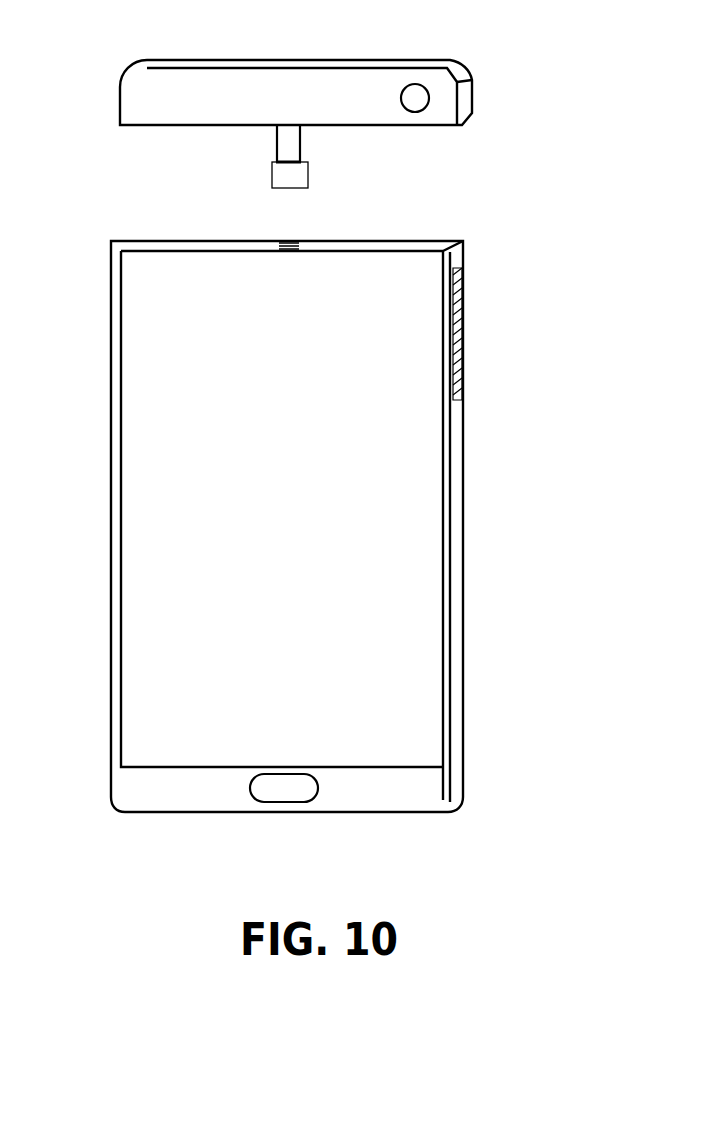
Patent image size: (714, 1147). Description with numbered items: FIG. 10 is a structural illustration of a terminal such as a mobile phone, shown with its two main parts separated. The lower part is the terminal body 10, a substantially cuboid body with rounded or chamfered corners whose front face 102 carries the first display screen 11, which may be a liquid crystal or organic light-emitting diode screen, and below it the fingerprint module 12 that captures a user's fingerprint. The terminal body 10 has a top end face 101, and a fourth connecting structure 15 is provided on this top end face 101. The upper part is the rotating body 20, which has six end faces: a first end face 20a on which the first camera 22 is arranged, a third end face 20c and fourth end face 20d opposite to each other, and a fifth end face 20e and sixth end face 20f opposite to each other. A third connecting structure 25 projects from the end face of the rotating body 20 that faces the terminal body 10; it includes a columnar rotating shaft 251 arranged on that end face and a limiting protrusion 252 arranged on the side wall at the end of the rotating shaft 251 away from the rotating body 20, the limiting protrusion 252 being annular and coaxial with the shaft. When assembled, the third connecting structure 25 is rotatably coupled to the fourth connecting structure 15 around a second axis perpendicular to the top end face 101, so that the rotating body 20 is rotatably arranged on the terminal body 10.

The terminal body 10 is at (329, 485).
The top end face 101 is at (408, 251).
The front face 102 is at (408, 371).
The first display screen 11 is at (415, 540).
The fingerprint module 12 is at (285, 795).
The fourth connecting structure 15 is at (282, 248).
The rotating body 20 is at (190, 57).
The first end face 20a is at (278, 97).
The third end face 20c is at (466, 85).
The fourth end face 20d is at (345, 126).
The fifth end face 20e is at (258, 66).
The sixth end face 20f is at (122, 80).
The first camera 22 is at (420, 87).
The third connecting structure 25 is at (288, 160).
The rotating shaft 251 is at (282, 153).
The limiting protrusion 252 is at (280, 187).